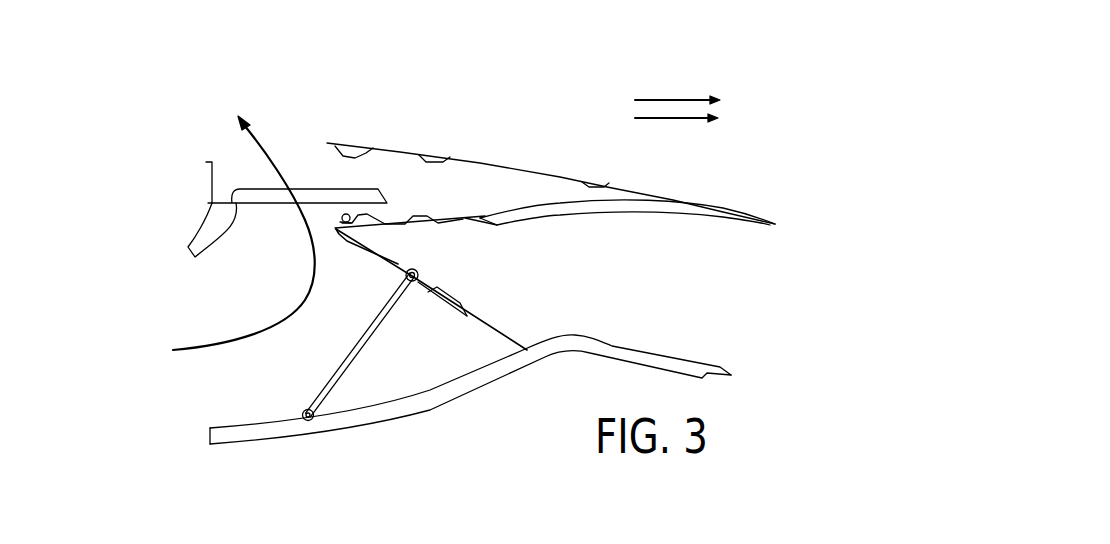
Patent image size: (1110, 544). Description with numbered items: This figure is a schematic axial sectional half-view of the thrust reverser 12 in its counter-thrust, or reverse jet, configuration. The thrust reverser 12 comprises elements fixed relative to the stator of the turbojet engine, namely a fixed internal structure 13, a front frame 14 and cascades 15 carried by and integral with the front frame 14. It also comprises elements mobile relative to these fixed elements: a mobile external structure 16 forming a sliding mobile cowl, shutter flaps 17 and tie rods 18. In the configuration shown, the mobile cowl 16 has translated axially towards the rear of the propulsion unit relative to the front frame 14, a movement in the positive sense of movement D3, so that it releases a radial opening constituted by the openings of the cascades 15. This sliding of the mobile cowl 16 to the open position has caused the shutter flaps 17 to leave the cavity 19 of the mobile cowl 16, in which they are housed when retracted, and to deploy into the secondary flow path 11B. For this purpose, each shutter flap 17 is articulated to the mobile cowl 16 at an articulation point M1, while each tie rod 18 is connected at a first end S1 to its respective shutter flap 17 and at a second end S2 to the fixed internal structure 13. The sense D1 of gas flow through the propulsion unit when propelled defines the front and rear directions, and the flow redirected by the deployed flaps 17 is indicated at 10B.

The thrust reverser 12 is at (510, 130).
The fixed internal structure 13 is at (485, 384).
The front frame 14 is at (206, 162).
The cascades 15 is at (308, 196).
The mobile external structure 16 is at (640, 187).
The shutter flaps 17 is at (450, 303).
The tie rods 18 is at (362, 347).
The cavity 19 is at (463, 219).
The reverse air flow 10B is at (308, 273).
The secondary flow path 11B is at (275, 379).
The articulation point M1 is at (352, 235).
The first end S1 is at (391, 284).
The second end S2 is at (300, 413).
The sense of gas flow D1 is at (672, 99).
The positive sense of movement D3 is at (672, 119).